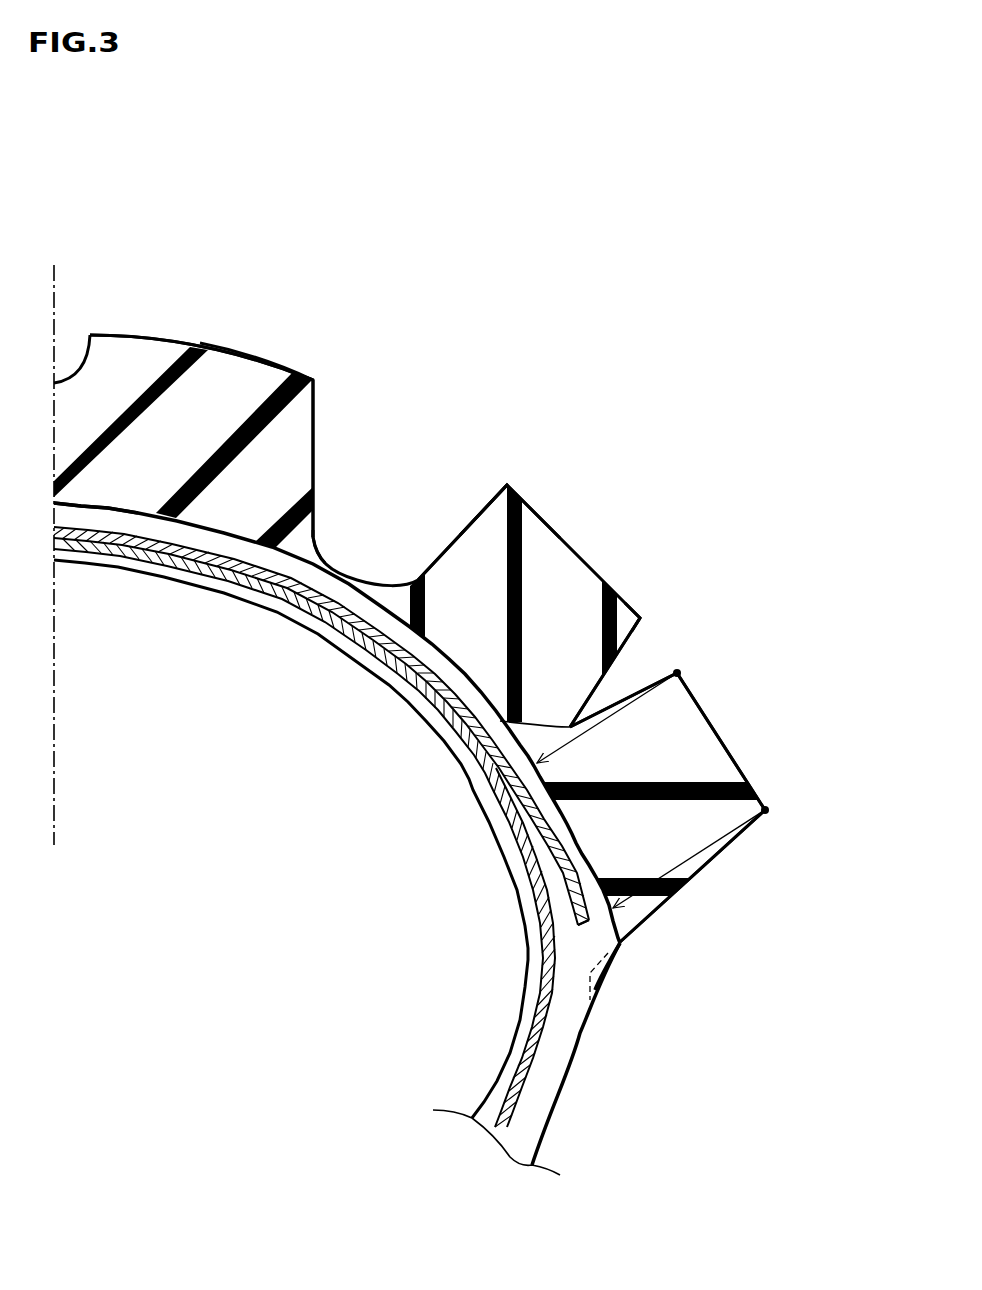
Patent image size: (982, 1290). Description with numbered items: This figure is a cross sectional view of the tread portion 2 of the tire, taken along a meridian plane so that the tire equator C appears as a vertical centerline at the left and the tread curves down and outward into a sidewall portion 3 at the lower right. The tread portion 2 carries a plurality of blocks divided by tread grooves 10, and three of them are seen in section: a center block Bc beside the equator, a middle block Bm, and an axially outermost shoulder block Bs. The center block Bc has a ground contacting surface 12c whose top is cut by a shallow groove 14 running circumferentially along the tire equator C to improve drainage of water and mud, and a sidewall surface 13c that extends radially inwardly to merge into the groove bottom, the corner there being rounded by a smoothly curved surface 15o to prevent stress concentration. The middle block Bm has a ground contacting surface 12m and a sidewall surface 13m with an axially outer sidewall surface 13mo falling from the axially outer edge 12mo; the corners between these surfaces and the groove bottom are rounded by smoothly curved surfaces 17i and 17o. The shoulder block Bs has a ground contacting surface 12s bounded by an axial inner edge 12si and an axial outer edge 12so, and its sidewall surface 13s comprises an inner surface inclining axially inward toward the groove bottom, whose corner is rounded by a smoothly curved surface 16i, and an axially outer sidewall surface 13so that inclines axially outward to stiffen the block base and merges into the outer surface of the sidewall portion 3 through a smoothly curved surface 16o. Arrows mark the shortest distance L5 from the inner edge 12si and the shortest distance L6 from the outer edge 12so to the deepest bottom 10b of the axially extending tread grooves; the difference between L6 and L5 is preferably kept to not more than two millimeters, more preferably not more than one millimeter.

The tread portion 2 is at (295, 370).
The sidewall portion 3 is at (563, 1112).
The tread grooves 10 is at (203, 517).
The bottom of axially extending tread groove 10b is at (95, 505).
The ground contacting surface of center block 12c is at (122, 333).
The ground contacting surface of middle block 12m is at (572, 528).
The ground contacting surface of shoulder block 12s is at (737, 757).
The axially outer edge of middle block ground contacting surface 12mo is at (643, 627).
The axial inner edge of shoulder block ground contacting surface 12si is at (677, 673).
The axial outer edge of shoulder block ground contacting surface 12so is at (768, 813).
The sidewall surface of center block 13c is at (317, 435).
The sidewall surface of middle block 13m is at (462, 532).
The axially outer sidewall surface of middle block 13mo is at (630, 650).
The sidewall surface of shoulder block 13s is at (597, 728).
The axially outer sidewall surface of shoulder block 13so is at (660, 900).
The shallow groove 14 is at (88, 352).
The smoothly curved surface 15o is at (383, 588).
The smoothly curved surface 16i is at (533, 717).
The smoothly curved surface 16o is at (607, 975).
The smoothly curved surface 17i is at (318, 548).
The smoothly curved surface 17o is at (553, 758).
The center block Bc is at (173, 340).
The middle block Bm is at (533, 502).
The shoulder block Bs is at (730, 736).
The tire equator C is at (54, 573).
The shortest distance from axial inner edge to groove bottom L5 is at (727, 733).
The shortest distance from axial outer edge to groove bottom L6 is at (700, 838).